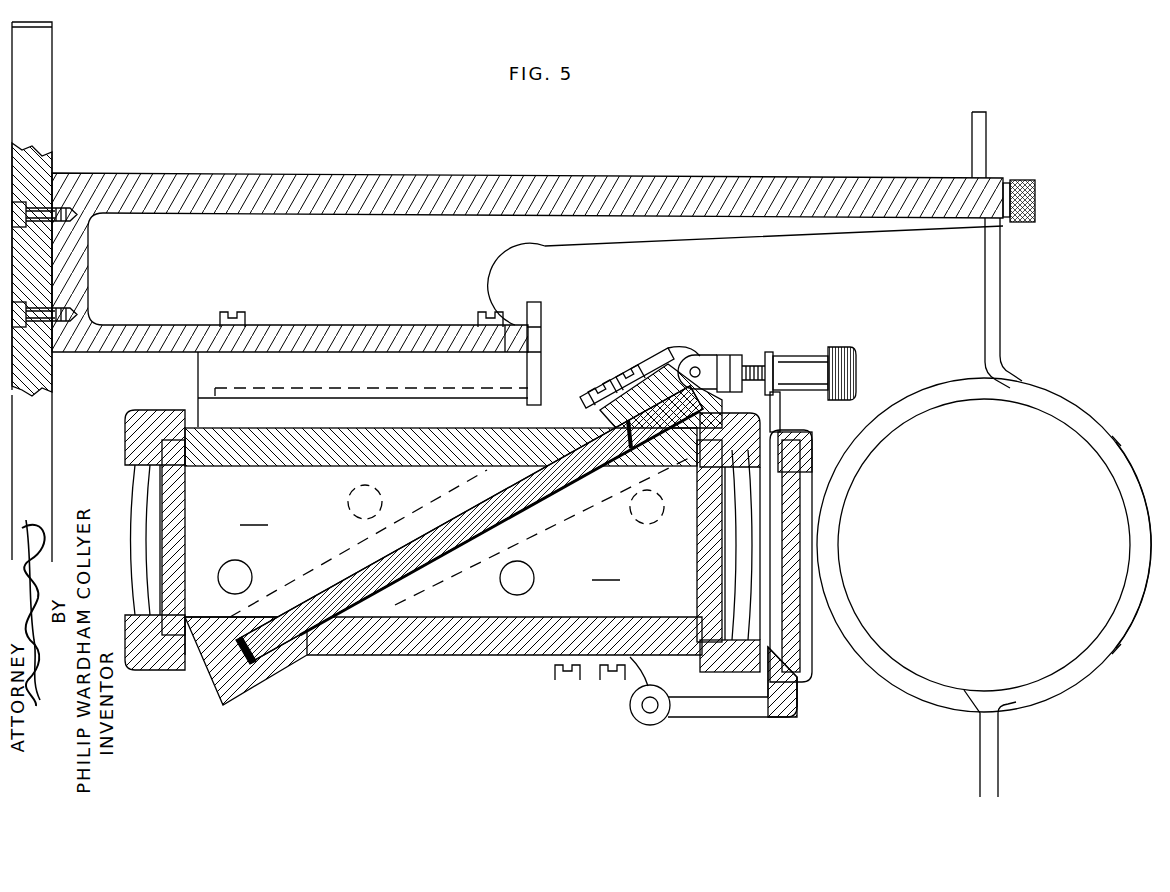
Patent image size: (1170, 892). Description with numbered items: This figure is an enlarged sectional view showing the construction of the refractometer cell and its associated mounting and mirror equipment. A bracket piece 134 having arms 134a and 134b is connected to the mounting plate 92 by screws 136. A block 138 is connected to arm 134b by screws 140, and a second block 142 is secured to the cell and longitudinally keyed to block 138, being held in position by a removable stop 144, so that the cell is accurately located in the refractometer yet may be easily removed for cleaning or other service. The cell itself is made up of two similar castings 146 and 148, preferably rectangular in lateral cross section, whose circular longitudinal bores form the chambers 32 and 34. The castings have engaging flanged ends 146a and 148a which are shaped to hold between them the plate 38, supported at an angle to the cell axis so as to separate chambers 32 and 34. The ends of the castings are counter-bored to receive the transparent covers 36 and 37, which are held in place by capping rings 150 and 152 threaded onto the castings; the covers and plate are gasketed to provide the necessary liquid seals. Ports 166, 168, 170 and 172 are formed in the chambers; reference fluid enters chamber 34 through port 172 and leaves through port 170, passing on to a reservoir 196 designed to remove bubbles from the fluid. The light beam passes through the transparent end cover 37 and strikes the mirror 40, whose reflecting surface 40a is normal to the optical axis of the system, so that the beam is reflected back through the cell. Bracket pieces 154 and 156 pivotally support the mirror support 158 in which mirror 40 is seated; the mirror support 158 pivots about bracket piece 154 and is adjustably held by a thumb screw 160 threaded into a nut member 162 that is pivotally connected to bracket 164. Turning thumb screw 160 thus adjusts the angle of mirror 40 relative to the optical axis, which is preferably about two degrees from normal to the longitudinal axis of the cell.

The mounting plate 92 is at (47, 106).
The screws 136 is at (62, 206).
The bracket piece 134 is at (166, 178).
The arm 134a is at (597, 178).
The arm 134b is at (512, 324).
The screws 140 is at (246, 314).
The block 138 is at (345, 368).
The second block 142 is at (212, 402).
The removable stop 144 is at (546, 363).
The capping ring 150 is at (136, 433).
The transparent cover 36 is at (182, 501).
The casting 146 is at (282, 454).
The casting 148 is at (451, 652).
The flanged end 148a is at (238, 698).
The chamber 32 is at (358, 543).
The chamber 34 is at (545, 530).
The plate 38 is at (424, 536).
The port 166 is at (243, 567).
The port 168 is at (350, 506).
The port 170 is at (533, 576).
The port 172 is at (634, 513).
The transparent end cover 37 is at (700, 575).
The capping ring 152 is at (748, 665).
The mirror 40 is at (796, 640).
The reflecting surface 40a is at (805, 462).
The bracket 164 is at (639, 364).
The flanged end 146a is at (695, 355).
The nut member 162 is at (730, 355).
The thumb screw 160 is at (820, 357).
The bracket piece 154 is at (621, 681).
The bracket piece 156 is at (724, 718).
The mirror support 158 is at (798, 700).
The reservoir 196 is at (1060, 440).